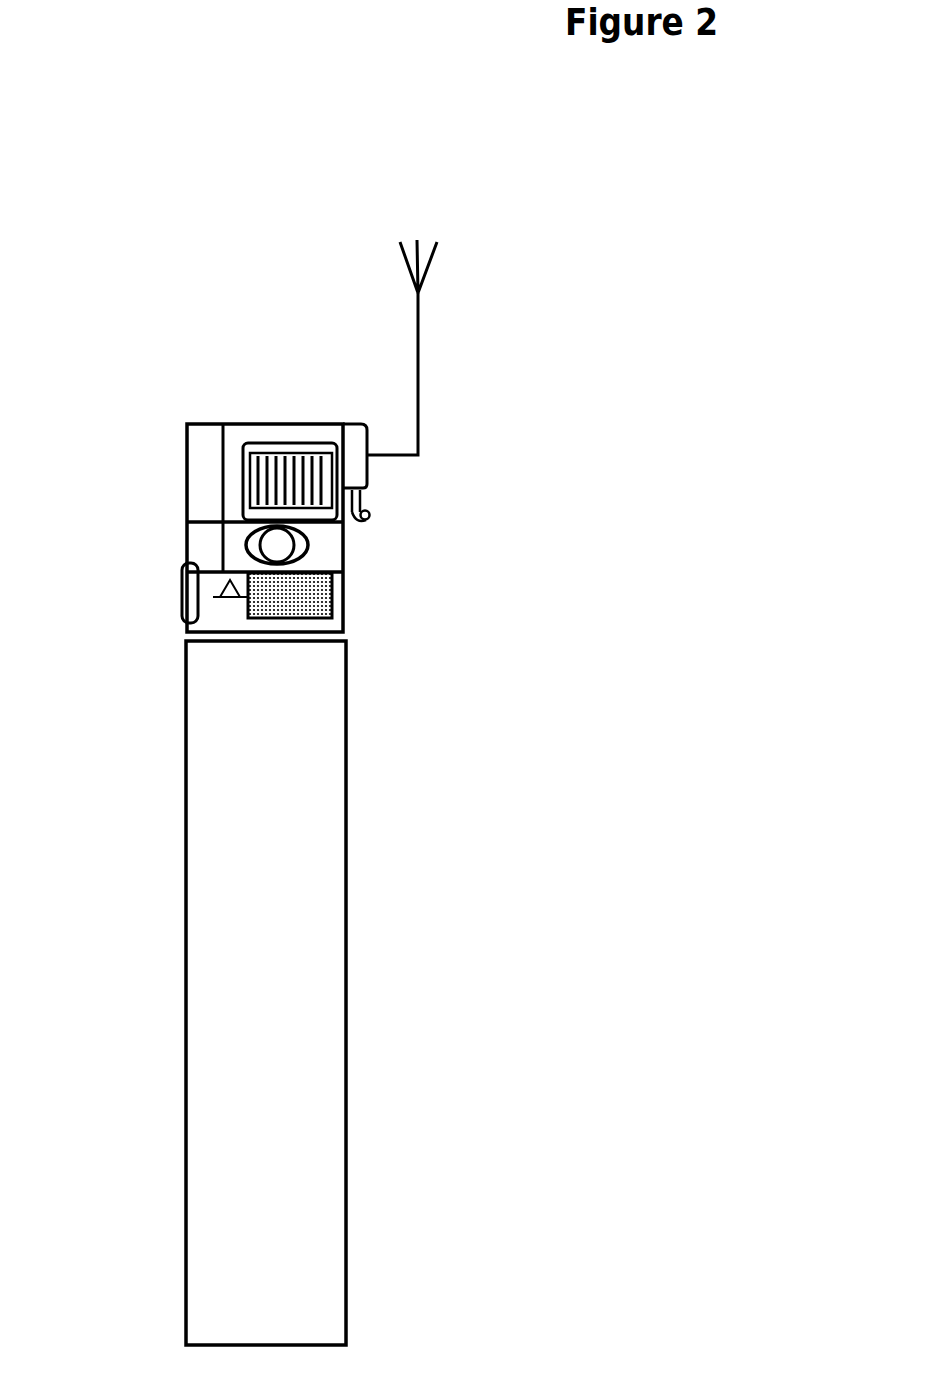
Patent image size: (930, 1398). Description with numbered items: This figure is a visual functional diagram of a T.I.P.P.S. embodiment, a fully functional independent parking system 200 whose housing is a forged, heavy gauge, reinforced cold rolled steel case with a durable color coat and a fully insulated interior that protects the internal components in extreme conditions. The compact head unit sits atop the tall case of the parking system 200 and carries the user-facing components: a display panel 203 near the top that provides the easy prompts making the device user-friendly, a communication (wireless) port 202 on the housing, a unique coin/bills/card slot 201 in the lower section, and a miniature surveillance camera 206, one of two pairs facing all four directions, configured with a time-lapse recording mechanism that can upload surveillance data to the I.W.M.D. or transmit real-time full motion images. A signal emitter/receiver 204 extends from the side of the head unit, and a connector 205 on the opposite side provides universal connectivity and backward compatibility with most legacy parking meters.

The fully functional independent parking system 200 is at (369, 953).
The coin/bills/card slot 201 is at (357, 597).
The communication (wireless) port 202 is at (172, 527).
The display panel 203 is at (331, 424).
The signal emitter/receiver 204 is at (389, 278).
The connector 205 is at (167, 595).
The miniature surveillance camera 206 is at (326, 545).